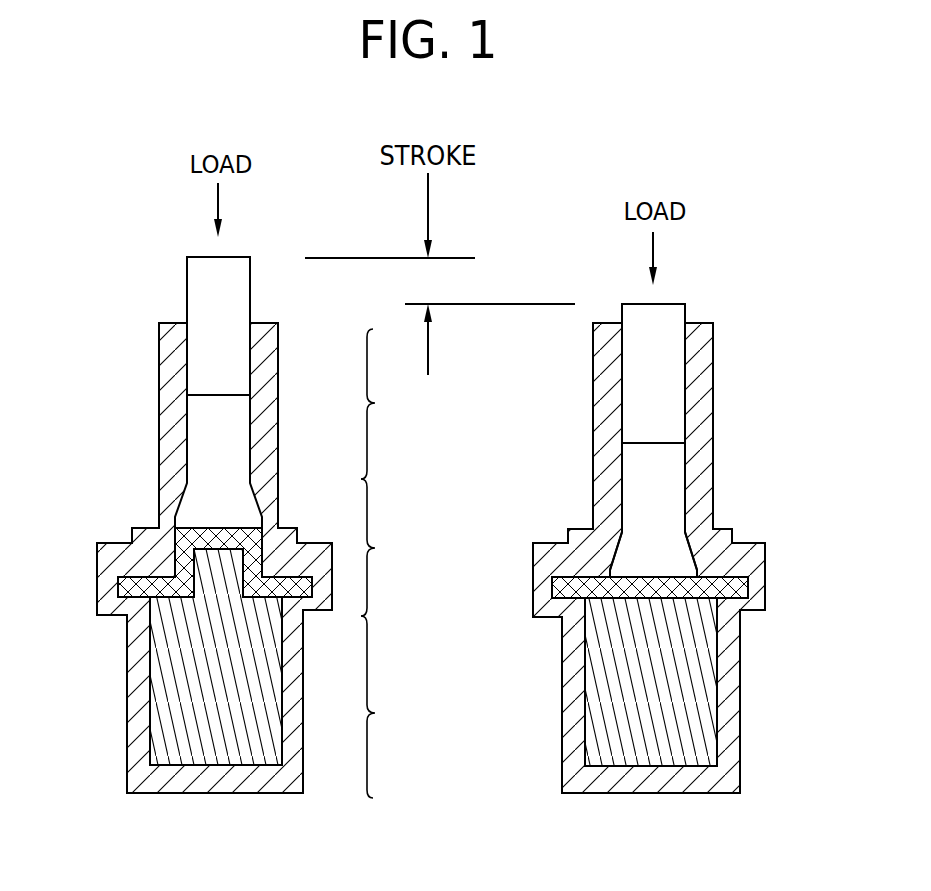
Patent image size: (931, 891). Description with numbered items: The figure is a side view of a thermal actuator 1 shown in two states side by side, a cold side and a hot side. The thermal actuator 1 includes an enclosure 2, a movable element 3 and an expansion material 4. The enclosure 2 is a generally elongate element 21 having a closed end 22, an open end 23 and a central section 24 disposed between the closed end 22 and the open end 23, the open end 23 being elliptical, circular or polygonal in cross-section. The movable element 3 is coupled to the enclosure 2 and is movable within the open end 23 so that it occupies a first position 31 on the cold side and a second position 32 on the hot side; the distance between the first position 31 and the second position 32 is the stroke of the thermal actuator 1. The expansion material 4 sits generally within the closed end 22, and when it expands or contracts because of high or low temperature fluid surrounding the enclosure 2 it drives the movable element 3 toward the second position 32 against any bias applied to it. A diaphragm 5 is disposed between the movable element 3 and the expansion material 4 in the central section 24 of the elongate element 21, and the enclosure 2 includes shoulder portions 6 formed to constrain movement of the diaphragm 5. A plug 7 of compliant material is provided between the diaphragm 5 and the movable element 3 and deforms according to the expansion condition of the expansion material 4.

The thermal actuator 1 is at (665, 551).
The enclosure 2 is at (697, 393).
The movable element 3 is at (670, 328).
The expansion material 4 is at (702, 735).
The diaphragm 5 is at (750, 580).
The shoulder portions 6 is at (738, 567).
The plug 7 is at (673, 485).
The elongate element 21 is at (561, 506).
The closed end 22 is at (391, 707).
The open end 23 is at (391, 404).
The central section 24 is at (391, 547).
The first position 31 is at (706, 300).
The second position 32 is at (168, 281).